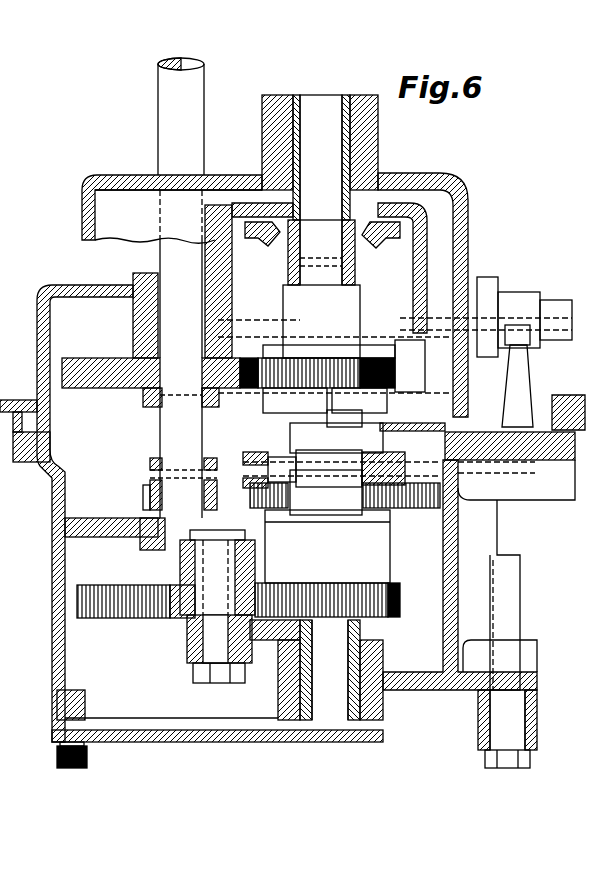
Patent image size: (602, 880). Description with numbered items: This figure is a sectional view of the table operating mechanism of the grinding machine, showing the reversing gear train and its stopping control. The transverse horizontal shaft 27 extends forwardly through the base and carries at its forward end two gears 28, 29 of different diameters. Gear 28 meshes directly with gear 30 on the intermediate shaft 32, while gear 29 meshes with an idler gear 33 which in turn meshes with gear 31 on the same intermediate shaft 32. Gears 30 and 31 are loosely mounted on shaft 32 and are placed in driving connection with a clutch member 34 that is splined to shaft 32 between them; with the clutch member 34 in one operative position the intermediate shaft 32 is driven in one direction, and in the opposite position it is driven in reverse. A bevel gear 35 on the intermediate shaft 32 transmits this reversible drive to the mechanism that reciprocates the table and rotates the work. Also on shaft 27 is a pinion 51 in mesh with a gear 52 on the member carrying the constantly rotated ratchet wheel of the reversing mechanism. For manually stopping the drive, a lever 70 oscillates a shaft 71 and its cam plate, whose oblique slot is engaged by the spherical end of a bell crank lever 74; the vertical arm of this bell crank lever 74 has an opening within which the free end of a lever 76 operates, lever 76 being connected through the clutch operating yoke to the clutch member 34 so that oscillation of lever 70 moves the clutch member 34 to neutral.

The transverse horizontal shaft 27 is at (157, 105).
The gear 28 is at (91, 358).
The gear 29 is at (97, 613).
The gear 30 is at (258, 352).
The gear 31 is at (400, 597).
The intermediate shaft 32 is at (332, 712).
The idler gear 33 is at (178, 613).
The clutch member 34 is at (275, 452).
The bevel gear 35 is at (368, 240).
The pinion 51 is at (145, 495).
The gear 52 is at (430, 506).
The lever 70 is at (478, 714).
The shaft 71 is at (500, 731).
The bell crank lever 74 is at (487, 280).
The lever 76 is at (515, 360).